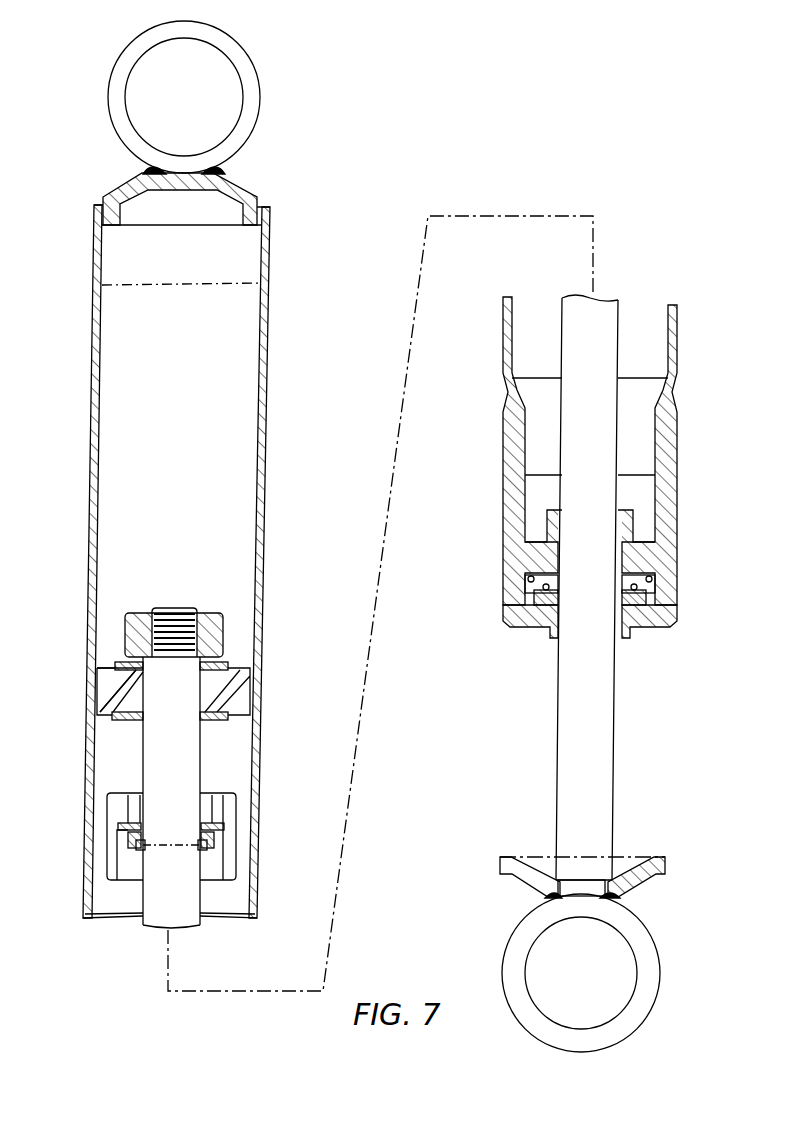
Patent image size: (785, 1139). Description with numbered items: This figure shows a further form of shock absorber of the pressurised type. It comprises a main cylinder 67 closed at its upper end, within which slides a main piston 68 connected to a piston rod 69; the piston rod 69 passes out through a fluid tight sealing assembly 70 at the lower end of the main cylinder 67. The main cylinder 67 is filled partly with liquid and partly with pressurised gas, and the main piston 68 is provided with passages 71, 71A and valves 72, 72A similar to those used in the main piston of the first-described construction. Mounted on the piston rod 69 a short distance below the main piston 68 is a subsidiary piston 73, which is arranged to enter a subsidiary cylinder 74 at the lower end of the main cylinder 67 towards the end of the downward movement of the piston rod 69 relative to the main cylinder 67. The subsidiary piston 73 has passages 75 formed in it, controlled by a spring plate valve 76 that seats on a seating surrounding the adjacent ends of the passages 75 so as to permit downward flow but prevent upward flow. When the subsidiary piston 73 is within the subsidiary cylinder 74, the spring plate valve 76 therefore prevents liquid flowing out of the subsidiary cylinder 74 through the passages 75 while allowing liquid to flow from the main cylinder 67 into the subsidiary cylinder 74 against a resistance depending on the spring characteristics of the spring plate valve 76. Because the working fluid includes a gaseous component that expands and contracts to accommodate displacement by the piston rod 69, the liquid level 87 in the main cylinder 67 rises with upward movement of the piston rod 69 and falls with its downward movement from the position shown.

The main cylinder 67 is at (252, 884).
The main piston 68 is at (236, 700).
The piston rod 69 is at (588, 710).
The fluid tight sealing assembly 70 is at (640, 588).
The passage 71 is at (237, 671).
The passage 71A is at (117, 686).
The valve 72 is at (213, 721).
The valve 72A is at (120, 662).
The subsidiary piston 73 is at (222, 810).
The subsidiary cylinder 74 is at (658, 468).
The passages 75 is at (131, 796).
The spring plate valve 76 is at (215, 832).
The liquid level 87 is at (118, 285).